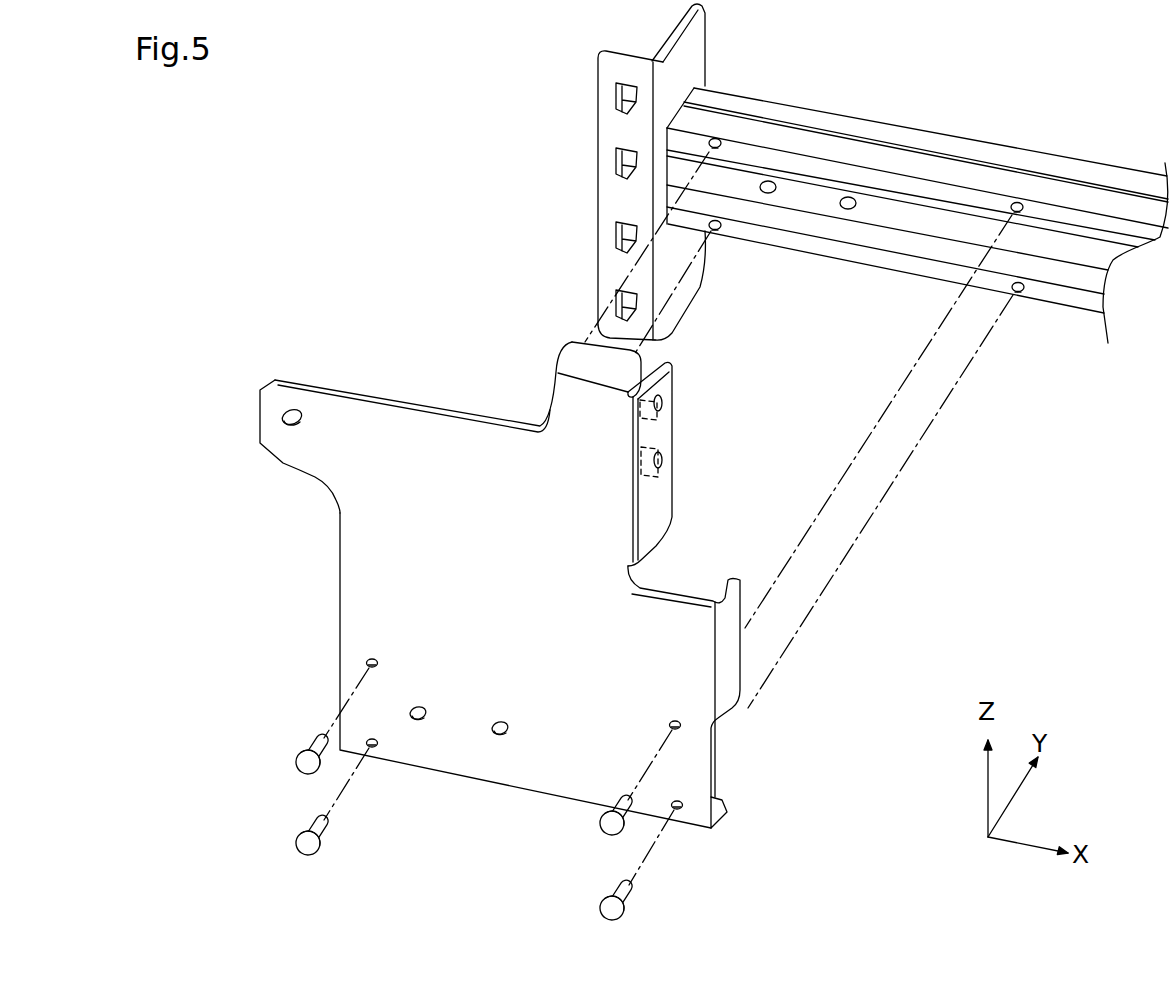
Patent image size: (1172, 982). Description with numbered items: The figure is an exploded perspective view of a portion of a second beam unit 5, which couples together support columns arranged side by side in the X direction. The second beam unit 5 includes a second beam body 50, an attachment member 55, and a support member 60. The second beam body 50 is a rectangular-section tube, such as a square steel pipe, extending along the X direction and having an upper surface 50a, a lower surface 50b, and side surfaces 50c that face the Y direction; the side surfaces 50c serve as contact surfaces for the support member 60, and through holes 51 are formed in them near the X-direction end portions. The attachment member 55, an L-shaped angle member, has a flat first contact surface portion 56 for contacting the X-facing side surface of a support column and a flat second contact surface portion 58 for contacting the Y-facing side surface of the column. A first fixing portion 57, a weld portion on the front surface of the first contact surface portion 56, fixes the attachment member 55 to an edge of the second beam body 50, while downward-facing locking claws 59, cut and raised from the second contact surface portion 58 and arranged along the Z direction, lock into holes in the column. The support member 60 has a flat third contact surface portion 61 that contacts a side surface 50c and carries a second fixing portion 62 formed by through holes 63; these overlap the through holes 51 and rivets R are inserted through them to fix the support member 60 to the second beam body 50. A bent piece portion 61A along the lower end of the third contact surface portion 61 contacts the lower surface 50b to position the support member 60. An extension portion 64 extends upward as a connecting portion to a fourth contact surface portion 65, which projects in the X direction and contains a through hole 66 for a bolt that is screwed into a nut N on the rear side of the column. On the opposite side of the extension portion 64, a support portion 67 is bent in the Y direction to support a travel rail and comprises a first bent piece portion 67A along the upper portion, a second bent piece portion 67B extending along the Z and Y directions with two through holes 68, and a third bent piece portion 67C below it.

The second beam unit 5 is at (445, 205).
The second beam body 50 is at (975, 137).
The upper surface 50a is at (1070, 195).
The lower surface 50b is at (915, 263).
The side surfaces 50c is at (807, 243).
The through holes 51 is at (716, 150).
The attachment member 55 is at (712, 22).
The first contact surface portion 56 is at (690, 287).
The first fixing portion 57 is at (682, 92).
The second contact surface portion 58 is at (604, 190).
The locking claws 59 is at (612, 158).
The support member 60 is at (408, 400).
The third contact surface portion 61 is at (498, 770).
The bent piece portion 61A is at (722, 800).
The second fixing portion 62 is at (469, 764).
The through holes 63 is at (371, 740).
The extension portion 64 is at (467, 603).
The fourth contact surface portion 65 is at (290, 455).
The through hole 66 is at (292, 410).
The support portion 67 is at (693, 540).
The first bent piece portion 67A is at (578, 357).
The second bent piece portion 67B is at (662, 492).
The third bent piece portion 67C is at (740, 648).
The through holes 68 is at (665, 458).
The nut N is at (634, 458).
The rivets R is at (310, 768).